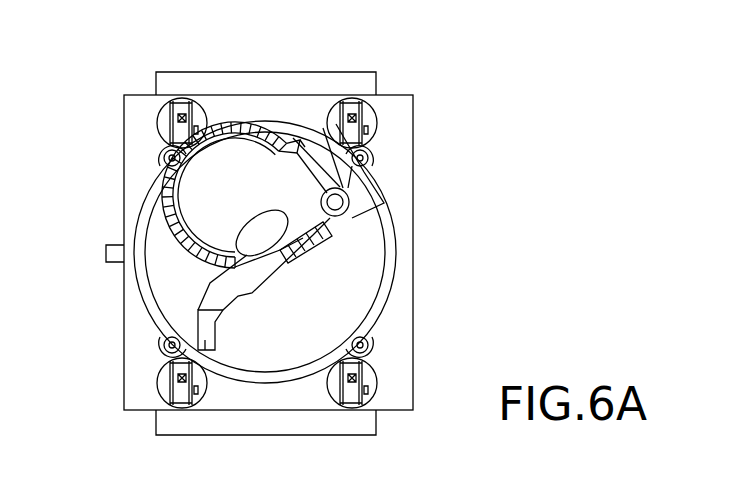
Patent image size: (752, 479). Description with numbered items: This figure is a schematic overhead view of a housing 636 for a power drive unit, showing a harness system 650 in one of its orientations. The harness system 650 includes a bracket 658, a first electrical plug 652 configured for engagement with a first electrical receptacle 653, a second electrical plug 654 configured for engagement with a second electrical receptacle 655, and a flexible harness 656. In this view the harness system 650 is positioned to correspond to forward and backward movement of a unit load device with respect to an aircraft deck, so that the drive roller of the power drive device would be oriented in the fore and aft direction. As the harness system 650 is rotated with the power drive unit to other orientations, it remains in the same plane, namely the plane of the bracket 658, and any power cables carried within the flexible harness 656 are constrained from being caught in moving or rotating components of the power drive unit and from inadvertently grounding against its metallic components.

The housing 636 is at (413, 128).
The harness system 650 is at (175, 260).
The first electrical plug 652 is at (332, 165).
The first electrical receptacle 653 is at (300, 150).
The second electrical plug 654 is at (372, 222).
The second electrical receptacle 655 is at (350, 203).
The flexible harness 656 is at (160, 203).
The bracket 658 is at (310, 262).